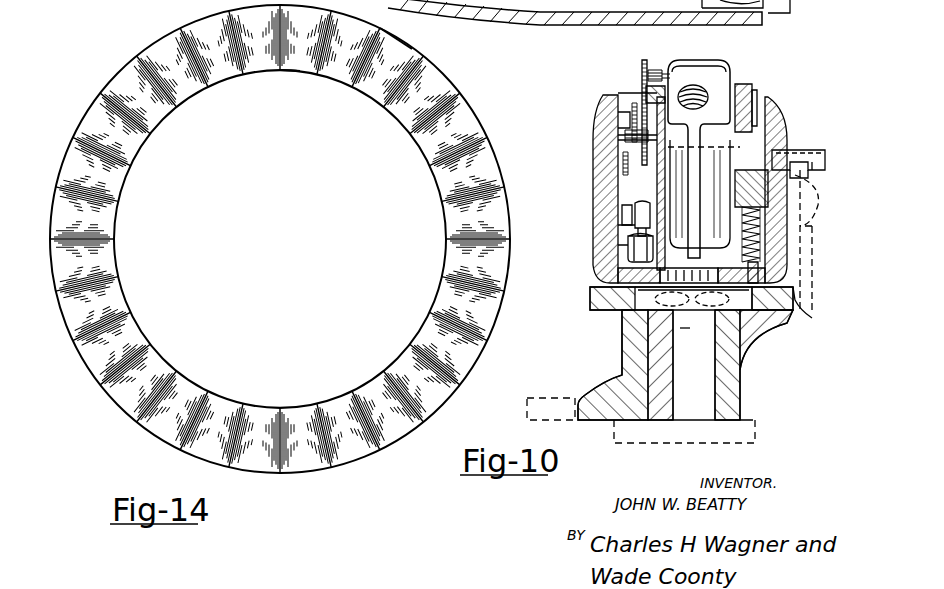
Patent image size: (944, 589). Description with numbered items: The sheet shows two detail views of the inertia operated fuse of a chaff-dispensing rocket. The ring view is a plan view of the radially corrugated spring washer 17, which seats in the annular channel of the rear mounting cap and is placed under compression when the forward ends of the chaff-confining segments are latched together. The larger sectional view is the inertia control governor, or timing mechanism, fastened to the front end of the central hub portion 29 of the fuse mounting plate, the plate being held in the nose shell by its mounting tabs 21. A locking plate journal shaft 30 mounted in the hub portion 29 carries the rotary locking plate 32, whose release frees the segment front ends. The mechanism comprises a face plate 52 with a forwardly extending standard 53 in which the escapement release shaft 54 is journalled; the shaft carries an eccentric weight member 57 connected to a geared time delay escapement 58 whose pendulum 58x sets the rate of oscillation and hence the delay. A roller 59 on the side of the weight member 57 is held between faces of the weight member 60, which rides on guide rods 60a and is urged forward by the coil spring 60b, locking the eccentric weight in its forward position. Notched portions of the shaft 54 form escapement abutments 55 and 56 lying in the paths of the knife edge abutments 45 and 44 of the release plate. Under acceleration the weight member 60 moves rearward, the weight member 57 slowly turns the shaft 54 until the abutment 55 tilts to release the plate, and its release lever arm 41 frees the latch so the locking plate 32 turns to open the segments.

In FIG. 14, the radially corrugated spring washer 17 is at (280, 69).
In FIG. 10, the mounting tabs 21 is at (771, 12).
In FIG. 10, the central hub portion 29 is at (608, 316).
In FIG. 10, the locking plate journal shaft 30 is at (667, 338).
In FIG. 10, the rotary actuating or locking plate 32 is at (643, 437).
In FIG. 10, the release lever arm 41 is at (812, 315).
In FIG. 10, the primary knife edge abutment 44 is at (806, 212).
In FIG. 10, the secondary knife edge abutment 45 is at (805, 230).
In FIG. 10, the face plate 52 is at (665, 277).
In FIG. 10, the standard 53 is at (598, 168).
In FIG. 10, the escapement release shaft 54 is at (790, 148).
In FIG. 10, the escapement abutment 55 is at (817, 158).
In FIG. 10, the escapement abutment 56 is at (795, 158).
In FIG. 10, the eccentric weight member 57 is at (684, 63).
In FIG. 10, the time delay escapement 58 is at (629, 80).
In FIG. 10, the pendulum 58x is at (600, 240).
In FIG. 10, the roller 59 is at (738, 88).
In FIG. 10, the weight member 60 is at (760, 160).
In FIG. 10, the guide rods 60a is at (748, 236).
In FIG. 10, the coil spring 60b is at (760, 252).